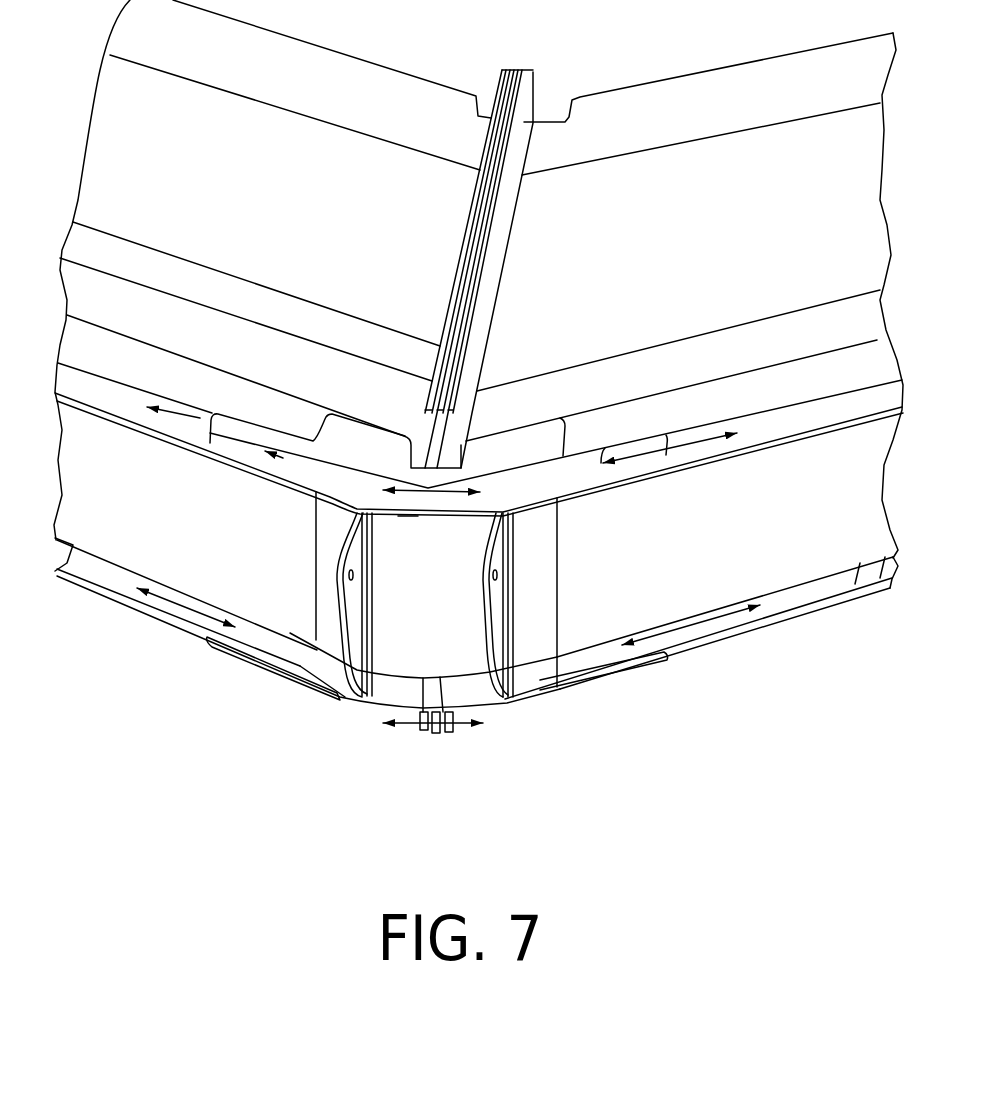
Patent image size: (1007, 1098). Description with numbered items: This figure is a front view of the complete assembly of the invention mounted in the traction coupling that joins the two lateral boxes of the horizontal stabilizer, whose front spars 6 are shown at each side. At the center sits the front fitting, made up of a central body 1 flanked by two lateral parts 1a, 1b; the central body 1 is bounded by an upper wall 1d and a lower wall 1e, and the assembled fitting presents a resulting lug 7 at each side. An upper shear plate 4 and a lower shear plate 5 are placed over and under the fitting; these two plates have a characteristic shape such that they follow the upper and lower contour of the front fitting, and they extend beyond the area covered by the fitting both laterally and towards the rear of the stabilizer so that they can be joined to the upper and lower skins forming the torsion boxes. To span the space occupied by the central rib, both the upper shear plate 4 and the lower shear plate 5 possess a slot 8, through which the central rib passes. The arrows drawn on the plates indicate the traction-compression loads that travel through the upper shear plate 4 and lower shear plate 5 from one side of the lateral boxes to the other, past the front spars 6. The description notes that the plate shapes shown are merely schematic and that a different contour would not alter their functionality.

The central body of the front fitting 1 is at (405, 710).
The lateral part of the front fitting 1a is at (287, 672).
The lateral part of the front fitting 1b is at (530, 705).
The upper wall of the central body 1d is at (400, 513).
The lower wall of the central body 1e is at (382, 685).
The upper shear plate 4 is at (597, 463).
The lower shear plate 5 is at (360, 690).
The front spars of the lateral boxes 6 is at (180, 547).
The resulting lug of the front fitting 7 is at (333, 658).
The slot in the upper and lower shear plates 8 is at (421, 487).